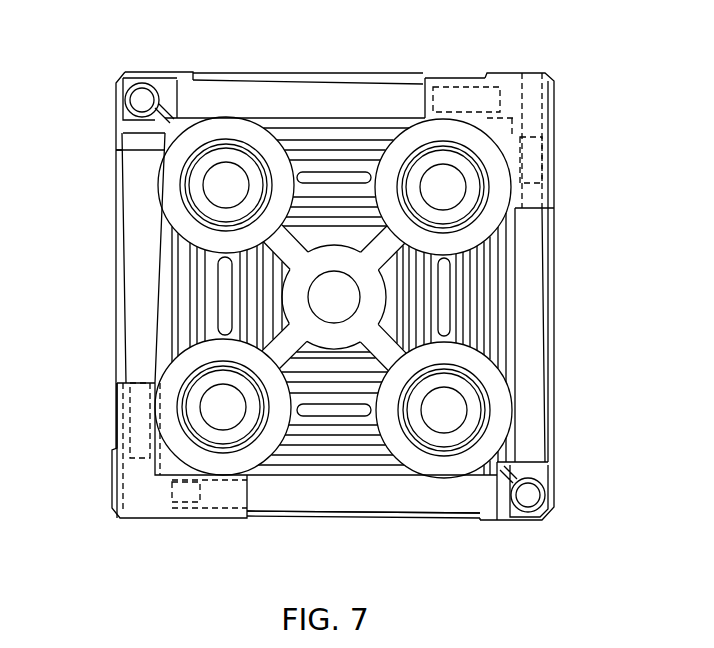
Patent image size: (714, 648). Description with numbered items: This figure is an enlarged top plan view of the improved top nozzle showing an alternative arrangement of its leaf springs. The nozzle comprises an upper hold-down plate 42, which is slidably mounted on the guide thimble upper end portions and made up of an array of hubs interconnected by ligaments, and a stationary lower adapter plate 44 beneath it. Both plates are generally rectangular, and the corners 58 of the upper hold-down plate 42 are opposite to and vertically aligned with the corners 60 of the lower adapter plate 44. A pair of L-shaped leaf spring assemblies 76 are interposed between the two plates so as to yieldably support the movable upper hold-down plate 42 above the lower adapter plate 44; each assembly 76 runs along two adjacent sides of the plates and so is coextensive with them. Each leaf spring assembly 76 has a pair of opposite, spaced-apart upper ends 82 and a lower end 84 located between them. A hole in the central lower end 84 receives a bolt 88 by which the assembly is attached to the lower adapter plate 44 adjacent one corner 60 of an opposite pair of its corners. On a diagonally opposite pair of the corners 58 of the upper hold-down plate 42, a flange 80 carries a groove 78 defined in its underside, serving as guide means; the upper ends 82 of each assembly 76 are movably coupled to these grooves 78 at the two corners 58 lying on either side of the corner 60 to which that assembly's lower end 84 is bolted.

The upper hold-down plate 42 is at (509, 223).
The lower adapter plate 44 is at (322, 520).
The corners of the upper hold-down plate 58 is at (497, 127).
The corners of the lower adapter plate 60 is at (117, 76).
The leaf spring assembly 76 is at (383, 72).
The groove 78 is at (543, 120).
The flange 80 is at (554, 200).
The upper ends 82 is at (455, 103).
The lower end 84 is at (170, 90).
The bolt 88 is at (137, 103).